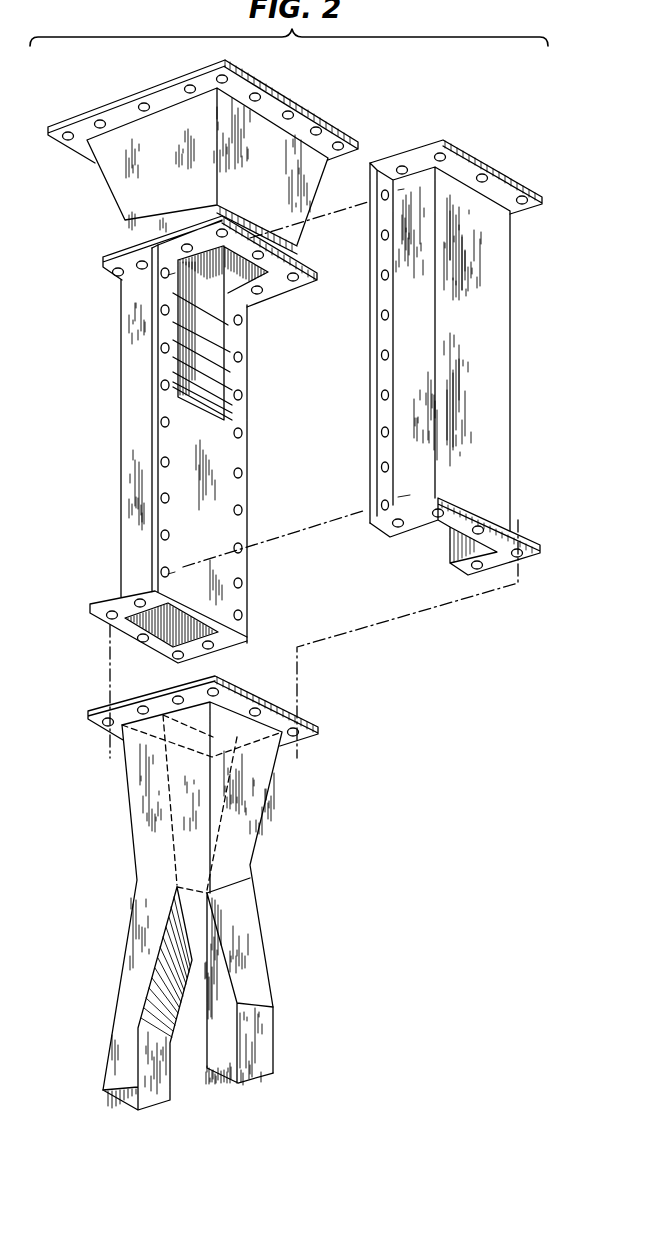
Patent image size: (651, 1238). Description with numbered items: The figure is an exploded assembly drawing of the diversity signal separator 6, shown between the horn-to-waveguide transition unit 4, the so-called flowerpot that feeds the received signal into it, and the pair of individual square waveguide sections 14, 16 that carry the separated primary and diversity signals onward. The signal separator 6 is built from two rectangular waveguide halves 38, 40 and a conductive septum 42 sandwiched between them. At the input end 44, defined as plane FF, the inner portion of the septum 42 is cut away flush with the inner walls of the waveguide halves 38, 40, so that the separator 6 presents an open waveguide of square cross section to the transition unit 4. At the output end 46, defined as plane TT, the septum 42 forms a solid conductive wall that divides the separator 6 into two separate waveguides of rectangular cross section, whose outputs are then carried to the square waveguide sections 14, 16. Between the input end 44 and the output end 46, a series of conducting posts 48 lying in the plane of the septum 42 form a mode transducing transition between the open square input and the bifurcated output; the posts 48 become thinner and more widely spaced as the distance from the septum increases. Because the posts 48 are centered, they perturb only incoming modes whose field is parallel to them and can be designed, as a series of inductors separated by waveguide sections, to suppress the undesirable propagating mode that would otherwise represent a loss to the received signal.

The horn-to-waveguide transition unit 4 is at (127, 172).
The diversity signal separator 6 is at (189, 439).
The square waveguide section 14 is at (112, 1046).
The square waveguide section 16 is at (258, 1043).
The rectangular waveguide half 38 is at (126, 538).
The rectangular waveguide half 40 is at (472, 349).
The conductive septum 42 is at (207, 488).
The input end 44 is at (481, 158).
The output end 46 is at (422, 538).
The posts 48 is at (212, 410).